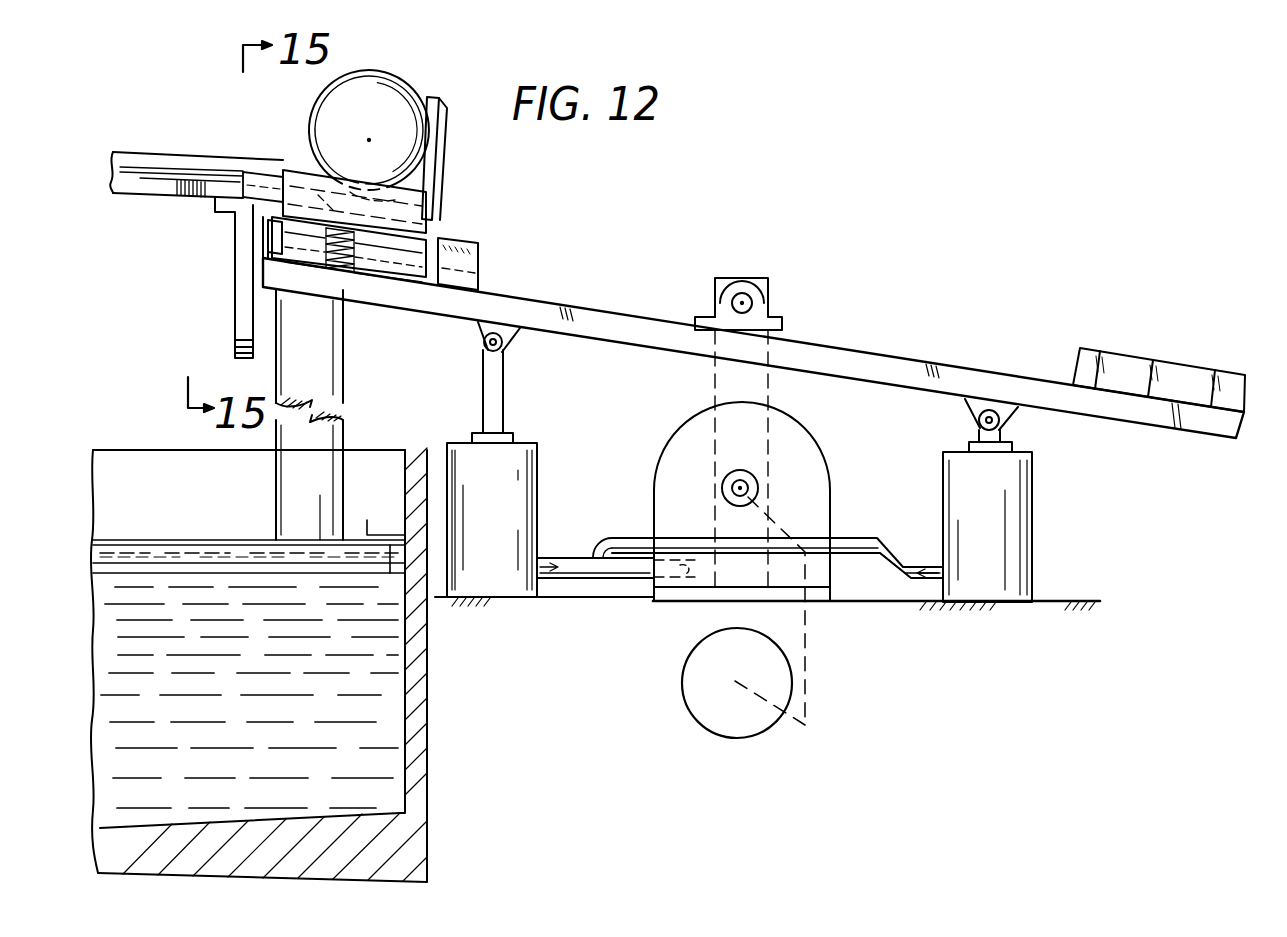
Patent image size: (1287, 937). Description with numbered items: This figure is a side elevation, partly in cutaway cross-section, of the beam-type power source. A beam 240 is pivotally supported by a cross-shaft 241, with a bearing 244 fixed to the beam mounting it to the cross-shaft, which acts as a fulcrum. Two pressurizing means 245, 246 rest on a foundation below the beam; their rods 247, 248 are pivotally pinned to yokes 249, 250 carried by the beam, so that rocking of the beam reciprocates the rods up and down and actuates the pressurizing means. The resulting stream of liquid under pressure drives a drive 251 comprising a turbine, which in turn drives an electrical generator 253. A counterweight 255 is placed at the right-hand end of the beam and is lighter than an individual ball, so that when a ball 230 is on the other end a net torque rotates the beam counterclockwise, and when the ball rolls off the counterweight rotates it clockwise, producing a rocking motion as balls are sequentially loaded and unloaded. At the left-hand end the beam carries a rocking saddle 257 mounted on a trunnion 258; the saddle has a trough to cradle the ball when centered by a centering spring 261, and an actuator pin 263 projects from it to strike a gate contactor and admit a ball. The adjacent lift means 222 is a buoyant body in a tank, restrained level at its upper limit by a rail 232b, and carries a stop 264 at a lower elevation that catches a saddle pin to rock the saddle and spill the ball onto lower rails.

The lift means 222 is at (203, 147).
The balls 230 is at (386, 76).
The rail 232b is at (367, 521).
The beam 240 is at (913, 360).
The cross-shaft 241 is at (742, 292).
The bearing 244 is at (772, 303).
The pressurizing means 245 is at (548, 484).
The pressurizing means 246 is at (1034, 529).
The rod 247 is at (505, 403).
The rod 248 is at (1003, 441).
The yoke 249 is at (507, 338).
The yoke 250 is at (969, 404).
The drive 251 is at (824, 462).
The electrical generator 253 is at (754, 726).
The counterweight 255 is at (1214, 372).
The rocking saddle 257 is at (287, 167).
The trunnion 258 is at (434, 244).
The centering spring 261 is at (262, 232).
The actuator pin 263 is at (250, 172).
The stop 264 is at (243, 320).